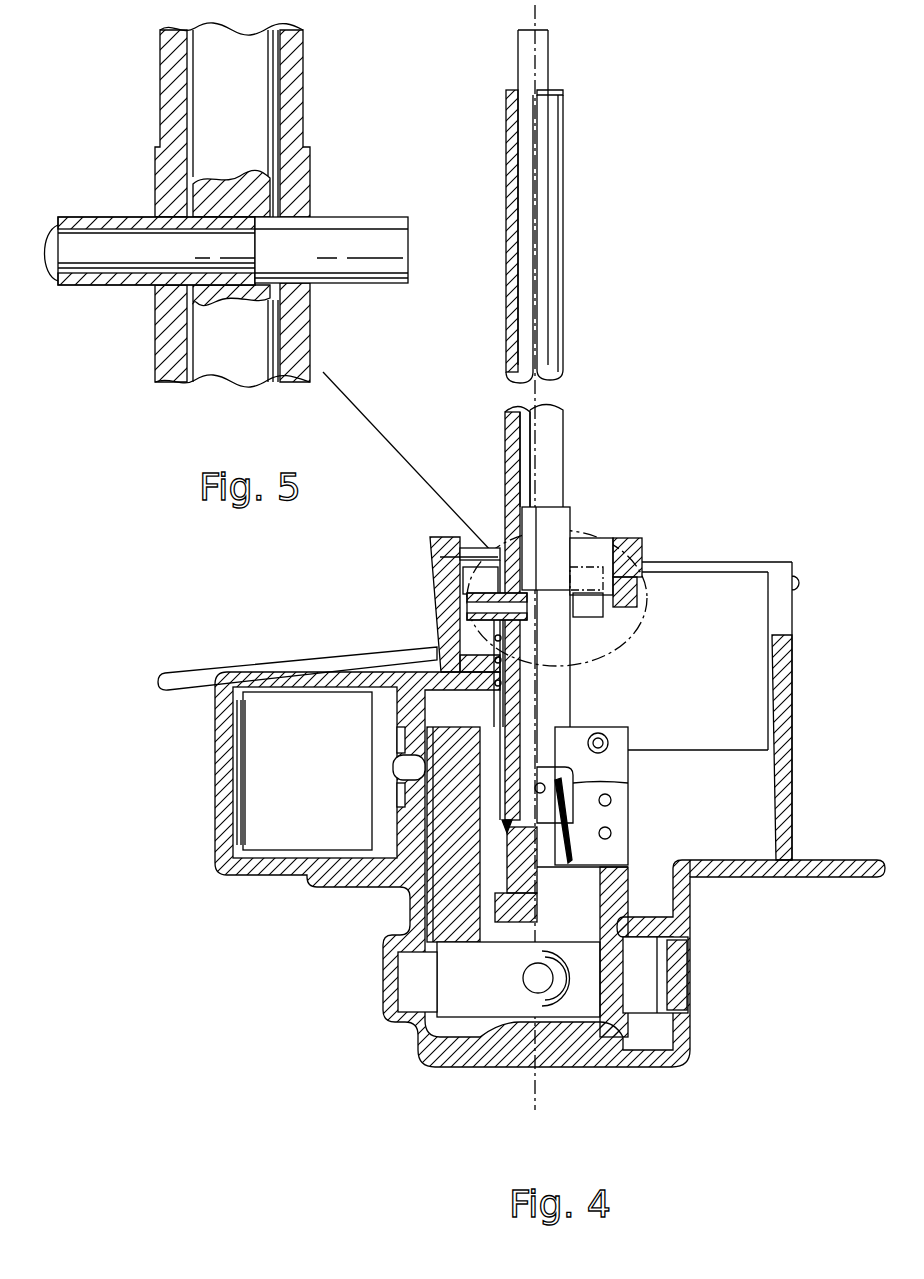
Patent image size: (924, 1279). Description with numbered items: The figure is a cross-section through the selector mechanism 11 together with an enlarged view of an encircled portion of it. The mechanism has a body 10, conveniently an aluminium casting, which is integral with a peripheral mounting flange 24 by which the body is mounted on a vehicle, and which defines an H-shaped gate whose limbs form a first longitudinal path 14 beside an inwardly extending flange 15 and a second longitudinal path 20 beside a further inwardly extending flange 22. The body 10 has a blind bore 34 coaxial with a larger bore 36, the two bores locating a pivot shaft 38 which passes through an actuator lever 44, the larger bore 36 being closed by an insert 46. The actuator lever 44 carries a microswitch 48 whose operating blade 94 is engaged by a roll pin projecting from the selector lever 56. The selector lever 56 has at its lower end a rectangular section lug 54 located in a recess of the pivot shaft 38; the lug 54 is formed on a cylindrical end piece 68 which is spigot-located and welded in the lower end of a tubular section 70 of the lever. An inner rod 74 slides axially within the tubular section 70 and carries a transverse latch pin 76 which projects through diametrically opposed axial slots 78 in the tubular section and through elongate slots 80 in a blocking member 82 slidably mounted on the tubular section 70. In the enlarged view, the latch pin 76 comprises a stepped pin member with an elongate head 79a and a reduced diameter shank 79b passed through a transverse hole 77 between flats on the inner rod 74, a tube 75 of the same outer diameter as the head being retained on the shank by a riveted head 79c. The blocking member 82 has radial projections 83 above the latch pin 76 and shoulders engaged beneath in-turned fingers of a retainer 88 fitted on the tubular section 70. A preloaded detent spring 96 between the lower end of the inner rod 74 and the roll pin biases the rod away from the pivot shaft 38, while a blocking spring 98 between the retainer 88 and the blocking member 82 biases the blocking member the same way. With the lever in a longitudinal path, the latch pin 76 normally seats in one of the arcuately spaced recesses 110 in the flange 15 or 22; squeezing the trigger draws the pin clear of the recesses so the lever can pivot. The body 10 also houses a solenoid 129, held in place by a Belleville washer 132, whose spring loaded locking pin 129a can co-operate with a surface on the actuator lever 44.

In FIG. 4, the body 10 is at (376, 1025).
In FIG. 4, the selector mechanism 11 is at (735, 406).
In FIG. 4, the first longitudinal path 14 is at (493, 555).
In FIG. 4, the inwardly extending flange 15 is at (445, 573).
In FIG. 4, the second longitudinal path 20 is at (600, 548).
In FIG. 4, the further inwardly extending flange 22 is at (643, 573).
In FIG. 4, the peripheral mounting flange 24 is at (825, 867).
In FIG. 4, the blind bore 34 is at (398, 967).
In FIG. 4, the larger bore 36 is at (689, 957).
In FIG. 4, the pivot shaft 38 is at (641, 997).
In FIG. 4, the actuator lever 44 is at (405, 898).
In FIG. 4, the insert 46 is at (676, 1000).
In FIG. 4, the microswitch 48 is at (615, 821).
In FIG. 4, the lug 54 is at (557, 1010).
In FIG. 5, the selector lever 56 is at (152, 108).
In FIG. 4, the selector lever 56 is at (574, 263).
In FIG. 4, the cylindrical end piece 68 is at (524, 908).
In FIG. 4, the tubular section 70 is at (506, 425).
In FIG. 5, the inner rod 74 is at (222, 83).
In FIG. 4, the inner rod 74 is at (543, 75).
In FIG. 5, the tube 75 is at (93, 216).
In FIG. 5, the latch pin 76 is at (341, 214).
In FIG. 4, the latch pin 76 is at (590, 611).
In FIG. 5, the transverse hole 77 is at (222, 286).
In FIG. 5, the axial slots 78 is at (168, 350).
In FIG. 5, the elongate head 79a is at (388, 218).
In FIG. 5, the reduced diameter shank 79b is at (92, 258).
In FIG. 5, the riveted head 79c is at (52, 244).
In FIG. 4, the elongate slots 80 is at (432, 562).
In FIG. 4, the blocking member 82 is at (567, 511).
In FIG. 4, the radial projections 83 is at (557, 557).
In FIG. 4, the retainer 88 is at (549, 668).
In FIG. 4, the operating blade 94 is at (570, 796).
In FIG. 4, the detent spring 96 is at (521, 746).
In FIG. 4, the blocking spring 98 is at (468, 674).
In FIG. 4, the recesses 110 is at (627, 594).
In FIG. 4, the solenoid 129 is at (258, 798).
In FIG. 4, the locking pin 129a is at (412, 770).
In FIG. 4, the Belleville washer 132 is at (246, 725).